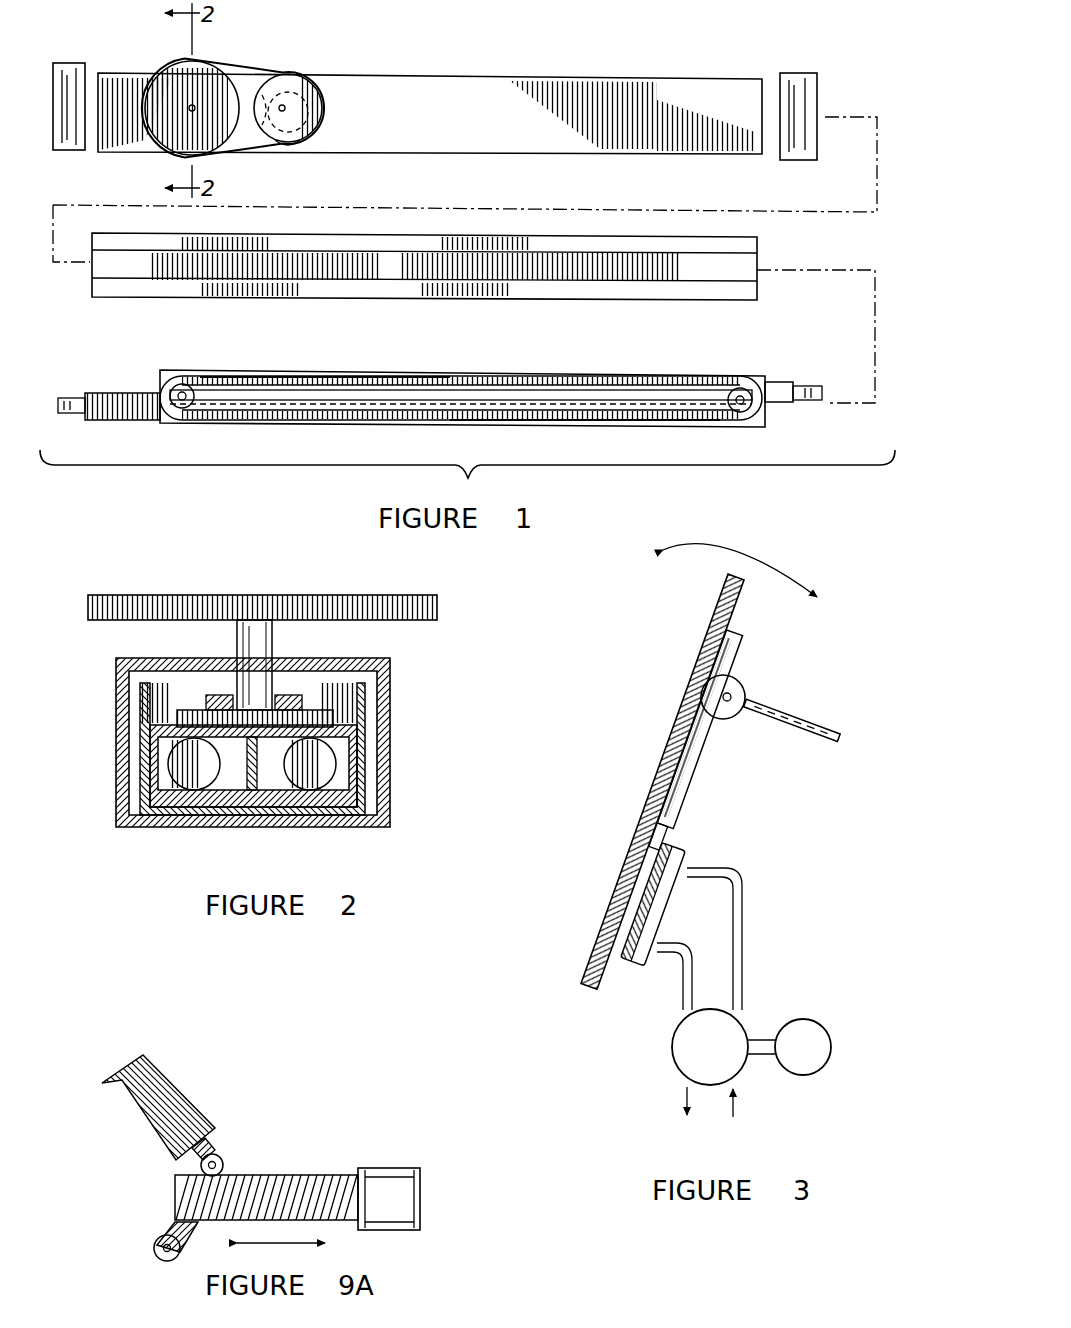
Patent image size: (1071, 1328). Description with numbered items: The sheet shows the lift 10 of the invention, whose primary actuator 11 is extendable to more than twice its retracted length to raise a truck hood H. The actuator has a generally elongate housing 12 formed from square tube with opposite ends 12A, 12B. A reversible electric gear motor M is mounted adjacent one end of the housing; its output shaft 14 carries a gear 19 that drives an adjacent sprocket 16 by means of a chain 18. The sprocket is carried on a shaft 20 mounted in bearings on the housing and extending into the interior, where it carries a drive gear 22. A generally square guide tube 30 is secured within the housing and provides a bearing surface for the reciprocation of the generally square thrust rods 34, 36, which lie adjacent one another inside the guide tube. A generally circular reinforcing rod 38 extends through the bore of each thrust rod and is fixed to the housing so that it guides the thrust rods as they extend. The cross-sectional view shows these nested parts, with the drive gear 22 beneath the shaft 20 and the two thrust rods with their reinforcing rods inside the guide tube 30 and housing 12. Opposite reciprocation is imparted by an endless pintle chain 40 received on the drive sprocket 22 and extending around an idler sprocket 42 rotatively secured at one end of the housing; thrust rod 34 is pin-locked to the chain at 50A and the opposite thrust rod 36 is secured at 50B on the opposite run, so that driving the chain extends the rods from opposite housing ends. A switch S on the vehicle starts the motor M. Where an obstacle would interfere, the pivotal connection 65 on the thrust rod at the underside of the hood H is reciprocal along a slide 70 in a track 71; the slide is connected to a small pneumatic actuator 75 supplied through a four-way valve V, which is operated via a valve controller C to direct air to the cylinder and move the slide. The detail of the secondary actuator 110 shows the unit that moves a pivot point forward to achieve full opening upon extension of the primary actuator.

In FIG. 1, the lift 10 is at (462, 57).
In FIG. 1, the primary actuator 11 is at (590, 78).
In FIG. 1, the housing 12 is at (660, 103).
In FIG. 2, the housing 12 is at (120, 693).
In FIG. 1, the housing end 12A is at (96, 78).
In FIG. 1, the housing end 12B is at (768, 98).
In FIG. 1, the output shaft 14 is at (284, 110).
In FIG. 1, the sprocket 16 is at (200, 85).
In FIG. 2, the sprocket 16 is at (368, 600).
In FIG. 1, the chain 18 is at (248, 78).
In FIG. 1, the gear 19 is at (287, 128).
In FIG. 2, the shaft 20 is at (237, 635).
In FIG. 1, the drive gear 22 is at (192, 380).
In FIG. 2, the drive gear 22 is at (323, 713).
In FIG. 1, the guide tube 30 is at (385, 300).
In FIG. 2, the guide tube 30 is at (140, 750).
In FIG. 1, the thrust rod 34 is at (453, 375).
In FIG. 2, the thrust rod 34 is at (160, 803).
In FIG. 9A, the thrust rod 34 is at (195, 1118).
In FIG. 1, the thrust rod 36 is at (122, 417).
In FIG. 2, the thrust rod 36 is at (353, 793).
In FIG. 3, the thrust rod 36 is at (822, 727).
In FIG. 2, the reinforcing rod 38 is at (187, 763).
In FIG. 1, the pintle chain 40 is at (505, 380).
In FIG. 1, the idler sprocket 42 is at (737, 393).
In FIG. 1, the pin lock 50A is at (267, 377).
In FIG. 1, the pin lock 50B is at (685, 423).
In FIG. 3, the pivotal connection 65 is at (743, 697).
In FIG. 3, the slide 70 is at (727, 682).
In FIG. 3, the track 71 is at (663, 793).
In FIG. 3, the pneumatic actuator 75 is at (690, 862).
In FIG. 9A, the secondary actuator 110 is at (305, 1160).
In FIG. 1, the gear motor M is at (280, 77).
In FIG. 9A, the gear motor M is at (410, 1196).
In FIG. 1, the switch S is at (327, 67).
In FIG. 3, the hood H is at (687, 687).
In FIG. 3, the valve V is at (702, 1077).
In FIG. 3, the valve controller C is at (803, 1047).